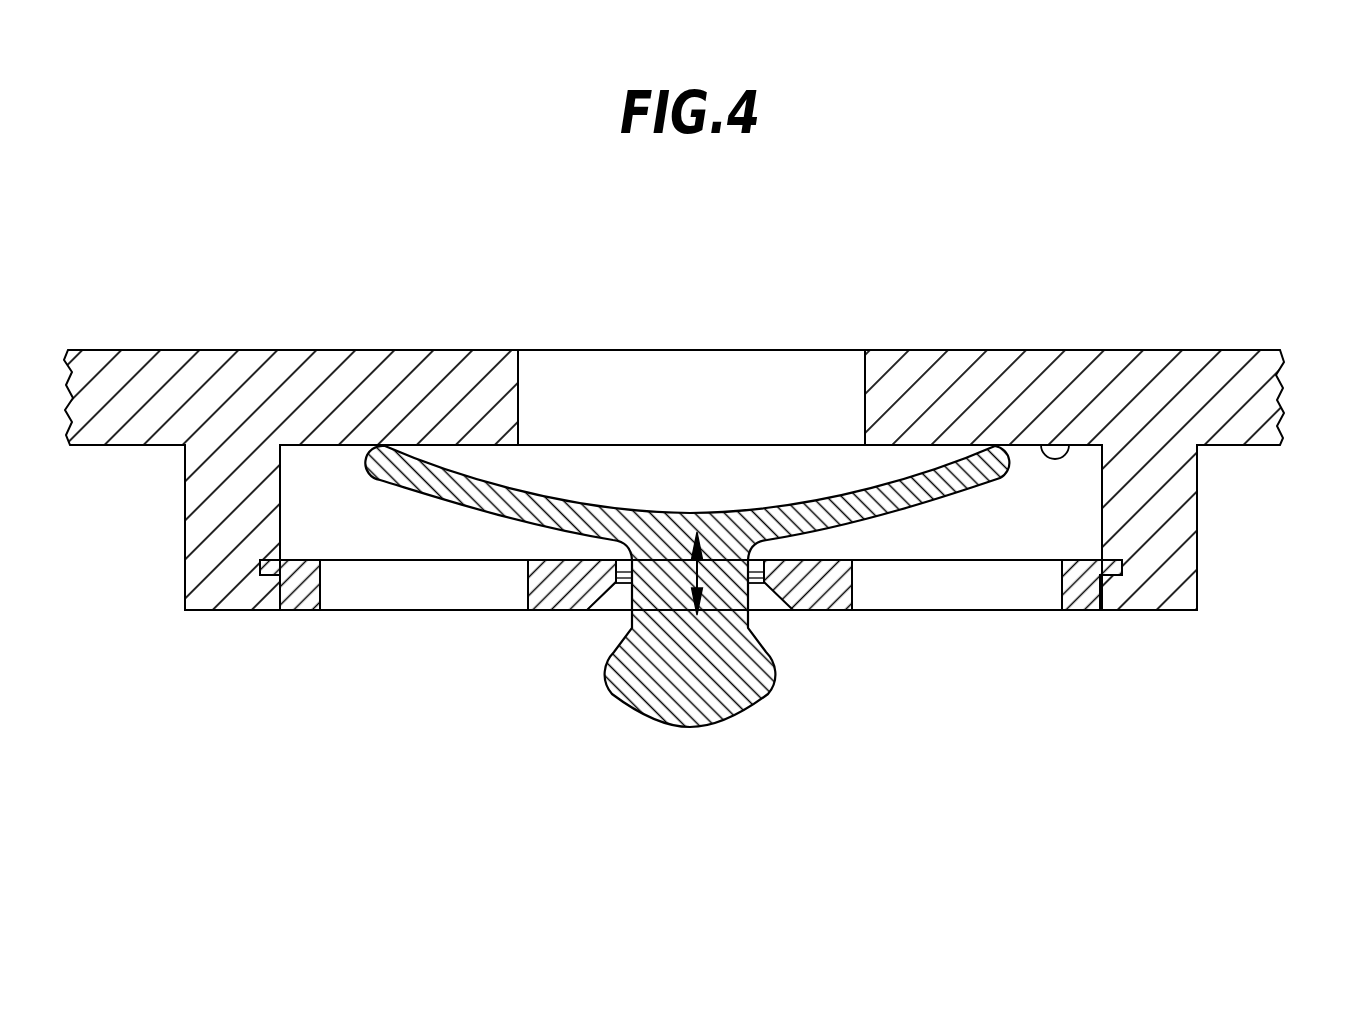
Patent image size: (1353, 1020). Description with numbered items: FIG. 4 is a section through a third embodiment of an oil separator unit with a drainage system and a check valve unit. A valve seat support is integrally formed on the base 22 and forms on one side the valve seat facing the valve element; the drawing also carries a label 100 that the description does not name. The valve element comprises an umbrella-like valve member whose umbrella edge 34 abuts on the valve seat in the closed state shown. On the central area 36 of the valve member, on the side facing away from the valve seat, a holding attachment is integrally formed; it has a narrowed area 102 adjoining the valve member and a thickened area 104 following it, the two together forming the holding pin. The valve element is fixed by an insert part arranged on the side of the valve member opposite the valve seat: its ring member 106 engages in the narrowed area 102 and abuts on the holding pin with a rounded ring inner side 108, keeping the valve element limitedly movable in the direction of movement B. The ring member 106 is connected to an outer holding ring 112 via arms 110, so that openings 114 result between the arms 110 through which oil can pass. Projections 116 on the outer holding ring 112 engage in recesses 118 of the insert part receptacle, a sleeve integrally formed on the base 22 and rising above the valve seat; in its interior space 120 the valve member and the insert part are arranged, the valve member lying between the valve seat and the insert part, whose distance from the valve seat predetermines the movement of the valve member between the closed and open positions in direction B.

The base 22 is at (97, 428).
The umbrella edge 34 is at (1003, 445).
The opening 100 is at (522, 374).
The interior space 120 is at (364, 531).
The arms 110 is at (350, 596).
The projections 116 is at (262, 563).
The recesses 118 is at (1108, 580).
The openings 114 is at (1062, 587).
The outer holding ring 112 is at (1075, 595).
The ring member 106 is at (800, 590).
The narrowed area 102 is at (612, 562).
The central area 36 is at (800, 500).
The rounded ring inner side 108 is at (744, 560).
The thickened area 104 is at (625, 685).
The direction of movement B is at (688, 560).